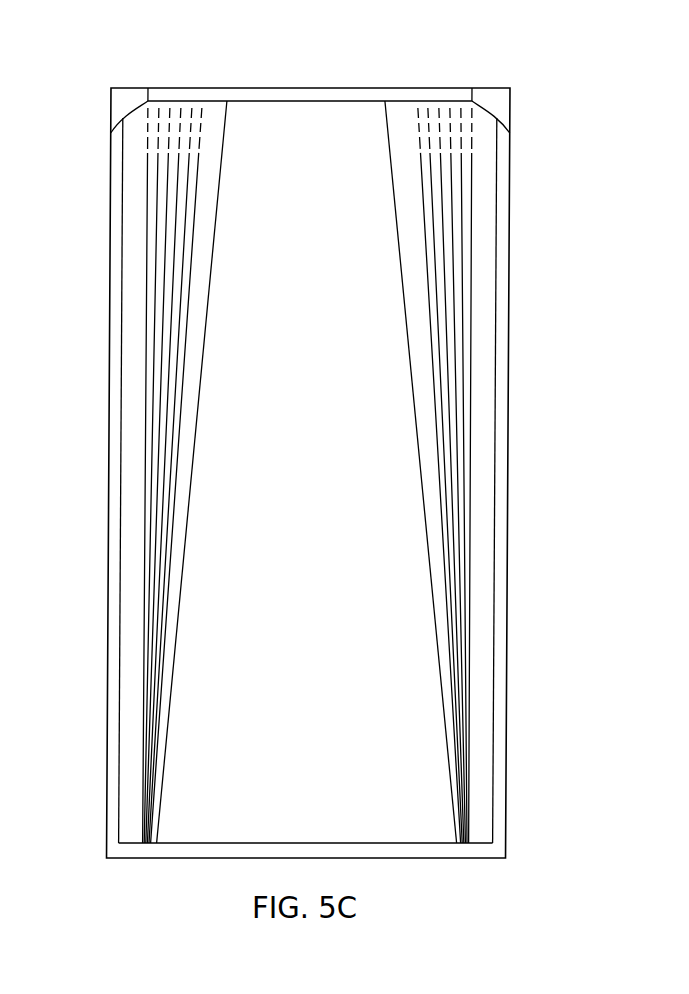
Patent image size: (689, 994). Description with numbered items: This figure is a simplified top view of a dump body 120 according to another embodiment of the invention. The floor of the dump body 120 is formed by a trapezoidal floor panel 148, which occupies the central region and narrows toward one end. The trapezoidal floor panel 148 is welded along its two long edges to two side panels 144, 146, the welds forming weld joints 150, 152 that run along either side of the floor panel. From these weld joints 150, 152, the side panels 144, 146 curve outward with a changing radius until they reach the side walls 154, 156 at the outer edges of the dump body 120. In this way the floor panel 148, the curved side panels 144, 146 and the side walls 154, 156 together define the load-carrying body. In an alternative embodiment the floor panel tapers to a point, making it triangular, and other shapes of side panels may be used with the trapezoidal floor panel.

The dump body 120 is at (532, 80).
The side panel 144 is at (452, 330).
The side panel 146 is at (169, 327).
The trapezoidal floor panel 148 is at (327, 649).
The weld joint 150 is at (413, 395).
The weld joint 152 is at (199, 395).
The side wall 154 is at (508, 461).
The side wall 156 is at (110, 457).